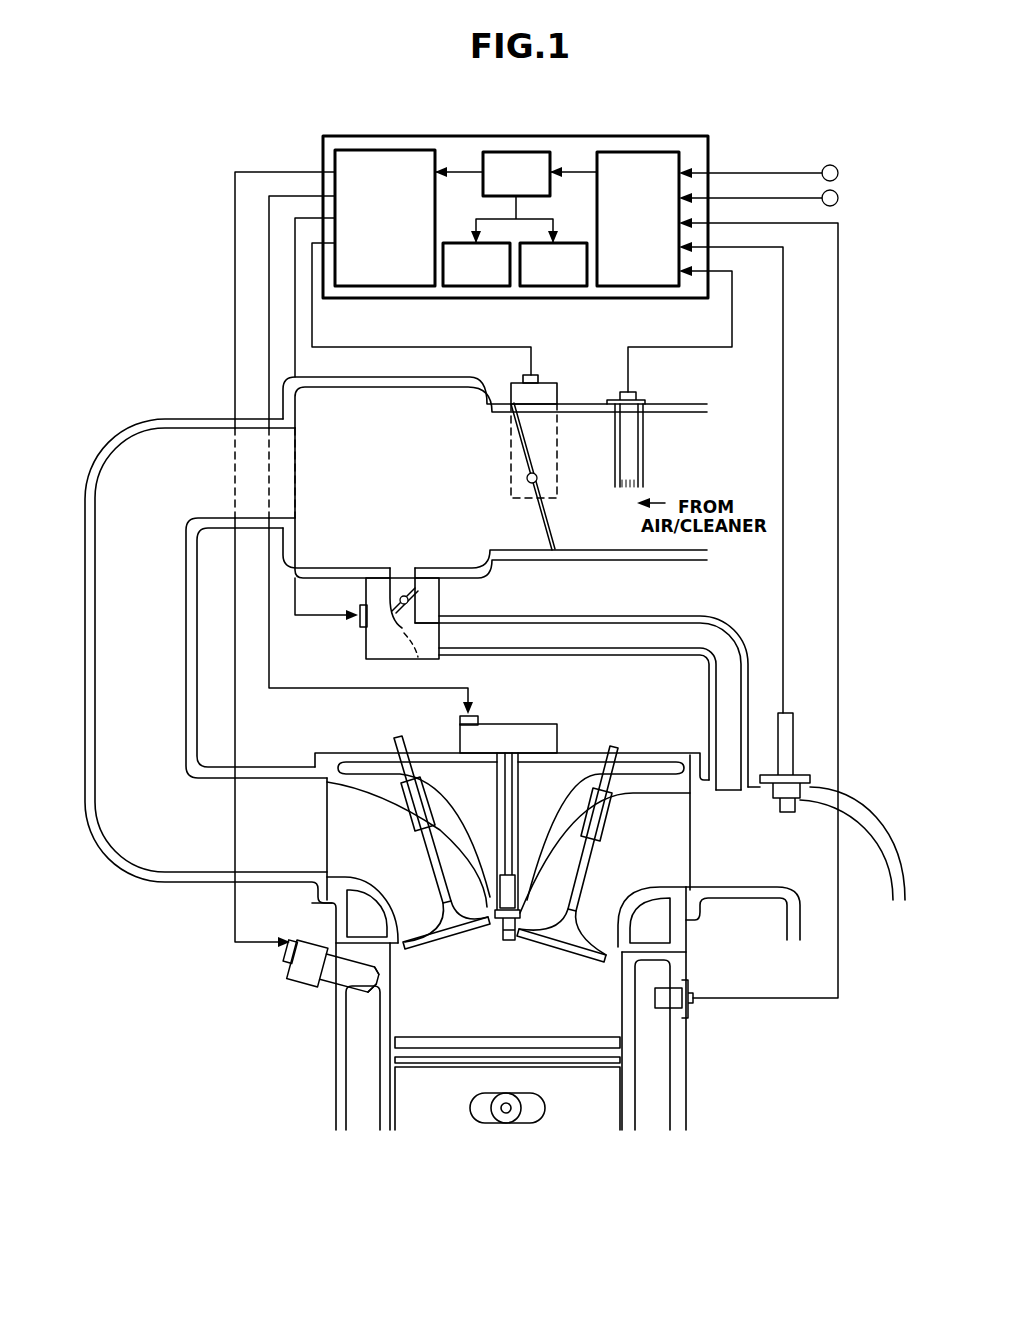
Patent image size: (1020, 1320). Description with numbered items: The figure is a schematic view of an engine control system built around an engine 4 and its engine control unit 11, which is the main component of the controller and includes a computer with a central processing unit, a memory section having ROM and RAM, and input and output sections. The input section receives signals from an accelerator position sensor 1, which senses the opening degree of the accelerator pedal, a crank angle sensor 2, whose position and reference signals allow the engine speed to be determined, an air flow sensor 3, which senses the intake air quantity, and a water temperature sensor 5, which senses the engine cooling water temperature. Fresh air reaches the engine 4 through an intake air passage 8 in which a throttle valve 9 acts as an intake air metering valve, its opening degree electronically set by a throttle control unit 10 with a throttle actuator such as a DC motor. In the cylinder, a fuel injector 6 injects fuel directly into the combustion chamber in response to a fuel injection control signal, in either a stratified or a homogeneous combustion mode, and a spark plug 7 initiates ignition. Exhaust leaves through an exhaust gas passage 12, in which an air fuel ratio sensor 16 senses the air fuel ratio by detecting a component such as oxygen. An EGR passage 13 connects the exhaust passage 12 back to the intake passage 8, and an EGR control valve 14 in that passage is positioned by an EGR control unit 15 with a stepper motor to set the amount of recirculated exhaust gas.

The accelerator position sensor 1 is at (838, 198).
The crank angle sensor 2 is at (838, 173).
The air flow sensor 3 is at (643, 437).
The engine 4 is at (695, 1122).
The water temperature sensor 5 is at (665, 1000).
The fuel injector 6 is at (315, 972).
The spark plug 7 is at (518, 907).
The intake air passage 8 is at (200, 419).
The throttle valve 9 is at (511, 435).
The throttle control unit 10 is at (557, 392).
The engine control unit 11 is at (708, 150).
The exhaust gas passage 12 is at (855, 810).
The EGR passage 13 is at (640, 616).
The EGR control valve 14 is at (413, 597).
The EGR control unit 15 is at (413, 653).
The air fuel ratio sensor 16 is at (786, 735).